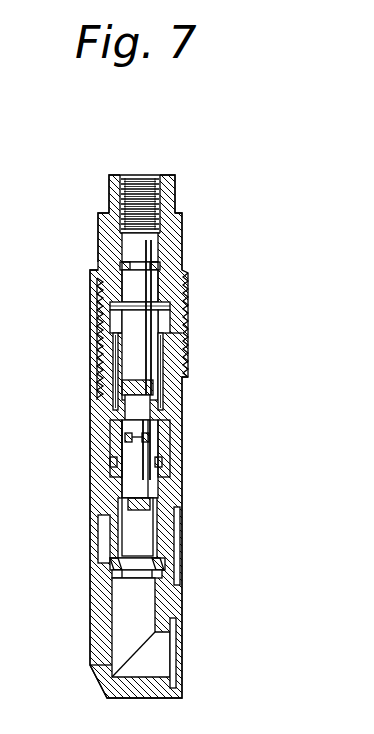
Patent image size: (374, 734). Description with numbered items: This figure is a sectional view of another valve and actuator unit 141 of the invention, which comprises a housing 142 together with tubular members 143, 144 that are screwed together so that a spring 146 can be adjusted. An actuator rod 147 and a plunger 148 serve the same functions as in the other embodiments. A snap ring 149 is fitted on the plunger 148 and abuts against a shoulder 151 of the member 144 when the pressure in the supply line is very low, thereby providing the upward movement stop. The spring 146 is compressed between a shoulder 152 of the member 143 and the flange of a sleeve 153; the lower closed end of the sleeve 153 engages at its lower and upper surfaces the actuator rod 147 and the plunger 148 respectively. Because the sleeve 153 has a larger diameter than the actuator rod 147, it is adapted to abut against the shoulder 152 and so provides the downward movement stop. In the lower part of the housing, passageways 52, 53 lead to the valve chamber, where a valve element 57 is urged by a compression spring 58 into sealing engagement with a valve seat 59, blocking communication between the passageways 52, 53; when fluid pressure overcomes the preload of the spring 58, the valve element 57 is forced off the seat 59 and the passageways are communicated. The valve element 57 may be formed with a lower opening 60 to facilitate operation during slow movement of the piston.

The unit 141 is at (216, 484).
The housing 142 is at (177, 470).
The tubular member 143 is at (187, 324).
The tubular member 144 is at (180, 222).
The spring 146 is at (180, 347).
The actuator rod 147 is at (110, 434).
The plunger 148 is at (135, 326).
The snap ring 149 is at (180, 306).
The shoulder 151 is at (163, 268).
The shoulder 152 is at (103, 419).
The sleeve 153 is at (116, 374).
The passageway 52 is at (178, 546).
The passageway 53 is at (155, 655).
The valve element 57 is at (112, 498).
The compression spring 58 is at (128, 545).
The valve seat 59 is at (105, 578).
The lower opening 60 is at (160, 588).